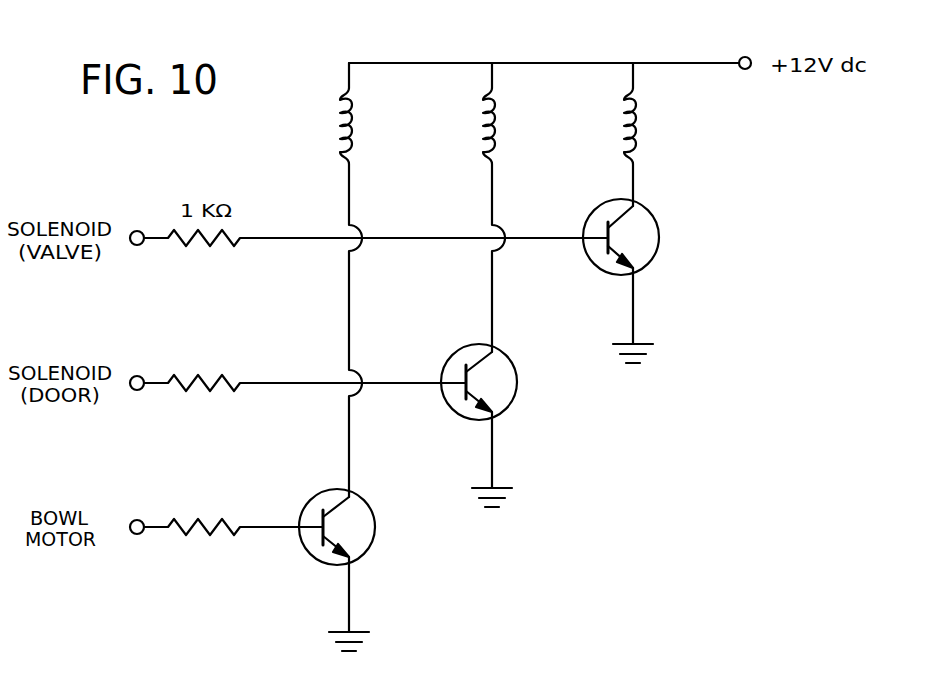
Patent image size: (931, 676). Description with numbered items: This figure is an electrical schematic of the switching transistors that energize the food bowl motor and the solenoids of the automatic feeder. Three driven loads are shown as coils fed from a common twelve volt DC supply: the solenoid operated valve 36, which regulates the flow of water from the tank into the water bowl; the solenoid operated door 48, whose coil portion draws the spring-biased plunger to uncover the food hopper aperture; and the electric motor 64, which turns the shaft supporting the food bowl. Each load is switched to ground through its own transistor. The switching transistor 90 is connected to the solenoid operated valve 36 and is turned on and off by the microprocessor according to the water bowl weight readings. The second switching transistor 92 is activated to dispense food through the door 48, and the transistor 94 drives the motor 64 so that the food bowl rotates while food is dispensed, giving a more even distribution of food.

The electric motor 64 is at (356, 129).
The solenoid operated door 48 is at (499, 123).
The solenoid operated valve 36 is at (645, 119).
The switching transistor 90 is at (657, 233).
The second switching transistor 92 is at (512, 381).
The transistor 94 is at (367, 526).